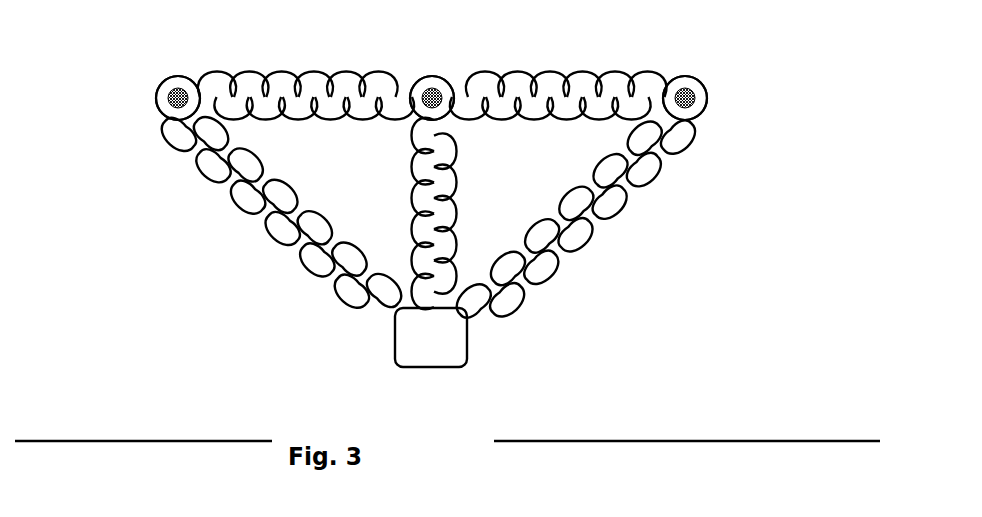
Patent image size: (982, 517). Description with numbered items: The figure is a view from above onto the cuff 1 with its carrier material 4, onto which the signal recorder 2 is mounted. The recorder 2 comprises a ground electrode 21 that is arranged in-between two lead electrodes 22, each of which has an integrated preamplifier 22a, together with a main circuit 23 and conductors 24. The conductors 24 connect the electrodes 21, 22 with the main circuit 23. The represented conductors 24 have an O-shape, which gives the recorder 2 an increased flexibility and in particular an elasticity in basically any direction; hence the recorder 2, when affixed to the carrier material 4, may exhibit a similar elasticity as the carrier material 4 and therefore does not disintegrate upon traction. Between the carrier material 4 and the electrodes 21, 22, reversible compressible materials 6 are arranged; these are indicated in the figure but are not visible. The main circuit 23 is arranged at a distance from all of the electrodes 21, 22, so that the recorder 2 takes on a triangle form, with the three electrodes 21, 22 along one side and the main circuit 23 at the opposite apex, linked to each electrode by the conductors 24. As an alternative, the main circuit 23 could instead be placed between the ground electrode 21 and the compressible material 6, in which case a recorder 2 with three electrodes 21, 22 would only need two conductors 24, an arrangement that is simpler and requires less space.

The cuff 1 is at (477, 204).
The carrier material 4 is at (460, 204).
The signal recorder 2 is at (460, 204).
The reversible compressible material 6 is at (203, 63).
The ground electrode 21 is at (432, 97).
The lead electrode 22 is at (178, 97).
The integrated preamplifier 22a is at (685, 97).
The main circuit 23 is at (454, 358).
The conductor 24 is at (263, 172).